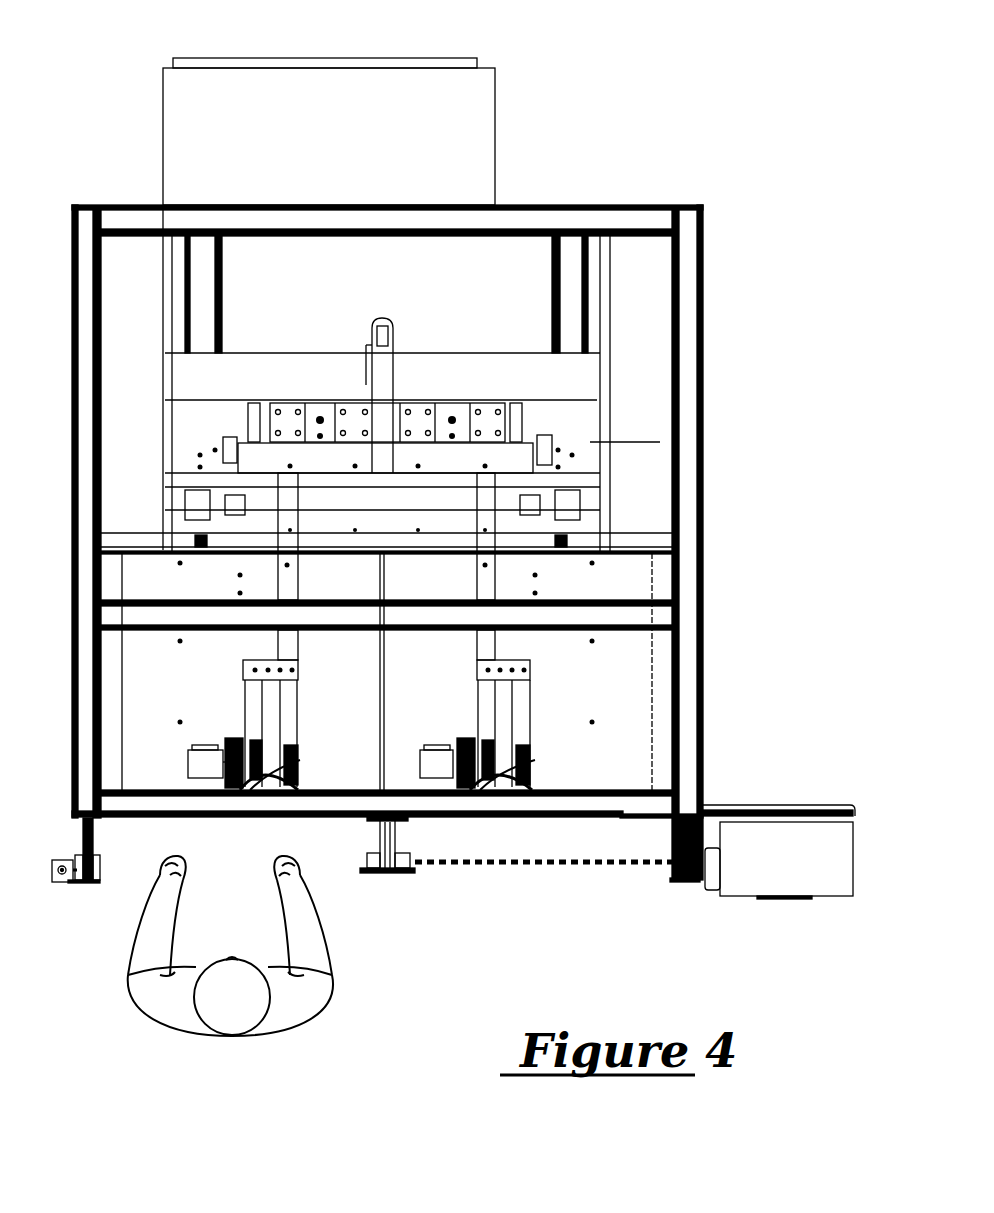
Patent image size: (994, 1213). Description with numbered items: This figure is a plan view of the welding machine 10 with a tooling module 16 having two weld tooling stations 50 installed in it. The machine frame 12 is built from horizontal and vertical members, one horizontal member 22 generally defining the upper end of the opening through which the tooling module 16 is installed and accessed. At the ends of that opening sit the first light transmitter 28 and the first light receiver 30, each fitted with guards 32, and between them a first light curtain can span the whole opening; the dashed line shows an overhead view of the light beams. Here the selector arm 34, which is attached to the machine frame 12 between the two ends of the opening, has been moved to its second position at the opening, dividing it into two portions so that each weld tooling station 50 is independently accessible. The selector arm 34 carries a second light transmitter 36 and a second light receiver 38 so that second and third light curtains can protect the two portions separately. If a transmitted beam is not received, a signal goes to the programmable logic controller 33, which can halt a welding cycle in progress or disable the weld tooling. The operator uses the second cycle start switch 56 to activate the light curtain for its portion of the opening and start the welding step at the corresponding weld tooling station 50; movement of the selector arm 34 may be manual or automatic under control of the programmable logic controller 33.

The welding machine 10 is at (684, 55).
The machine frame 12 is at (690, 266).
The tooling module 16 is at (632, 686).
The horizontal member 22 is at (563, 803).
The first light transmitter 28 is at (678, 866).
The first light receiver 30 is at (98, 865).
The guards 32 is at (85, 895).
The programmable logic controller 33 is at (784, 888).
The selector arm 34 is at (395, 873).
The second light transmitter 36 is at (365, 858).
The second light receiver 38 is at (410, 865).
The weld tooling station 50 is at (223, 742).
The second cycle start switch 56 is at (52, 890).